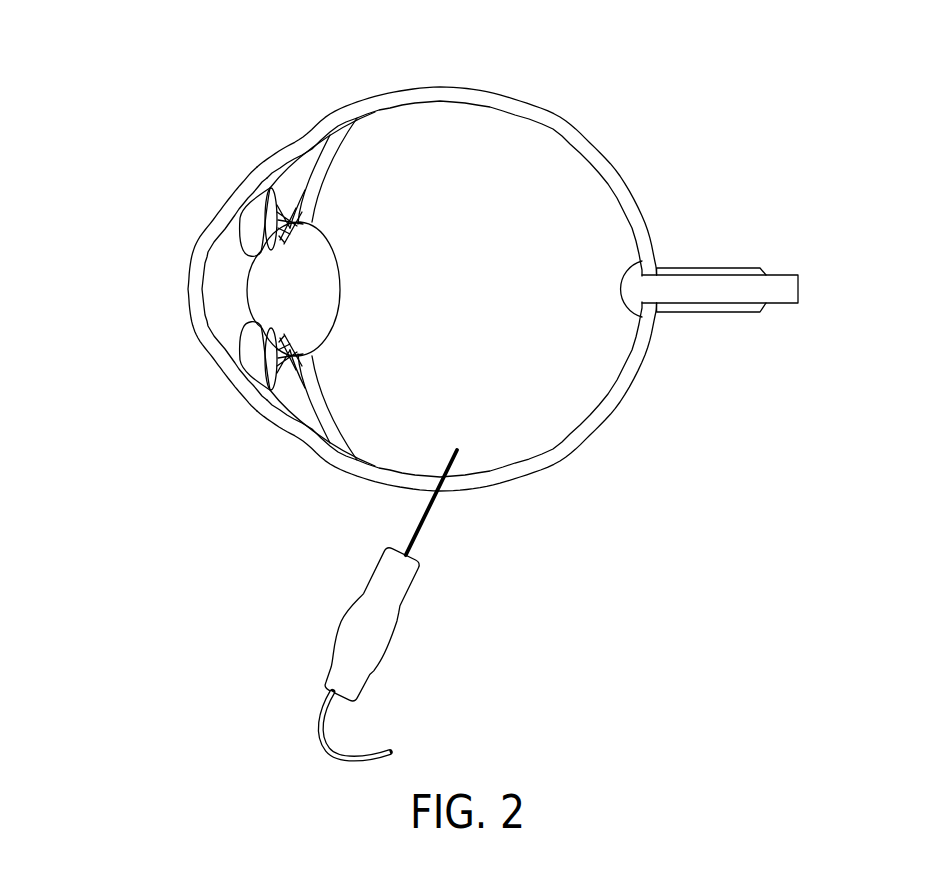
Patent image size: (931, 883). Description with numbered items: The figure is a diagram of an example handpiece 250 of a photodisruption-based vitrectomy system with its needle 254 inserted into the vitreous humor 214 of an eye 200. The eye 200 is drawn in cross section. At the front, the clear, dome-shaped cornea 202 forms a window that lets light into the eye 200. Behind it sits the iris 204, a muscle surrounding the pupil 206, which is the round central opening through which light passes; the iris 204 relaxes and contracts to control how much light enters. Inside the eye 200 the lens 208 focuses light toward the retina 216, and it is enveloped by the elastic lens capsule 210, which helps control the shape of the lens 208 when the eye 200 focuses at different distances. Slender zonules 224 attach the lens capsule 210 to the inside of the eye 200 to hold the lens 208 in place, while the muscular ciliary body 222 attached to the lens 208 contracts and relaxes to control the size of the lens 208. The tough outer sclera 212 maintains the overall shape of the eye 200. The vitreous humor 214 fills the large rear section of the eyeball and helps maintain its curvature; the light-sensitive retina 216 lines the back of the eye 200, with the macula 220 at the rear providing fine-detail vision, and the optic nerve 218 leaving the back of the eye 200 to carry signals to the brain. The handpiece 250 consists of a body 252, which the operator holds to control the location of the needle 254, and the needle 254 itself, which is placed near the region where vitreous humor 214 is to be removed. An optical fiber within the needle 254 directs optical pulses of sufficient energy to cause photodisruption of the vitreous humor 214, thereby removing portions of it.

The eye 200 is at (663, 130).
The cornea 202 is at (193, 253).
The iris 204 is at (242, 358).
The pupil 206 is at (221, 289).
The lens 208 is at (316, 257).
The lens capsule 210 is at (341, 290).
The sclera 212 is at (526, 100).
The vitreous humor 214 is at (520, 224).
The retina 216 is at (621, 383).
The optic nerve 218 is at (701, 236).
The macula 220 is at (623, 283).
The ciliary body 222 is at (292, 392).
The zonules 224 is at (302, 215).
The handpiece 250 is at (291, 593).
The body 252 is at (412, 585).
The needle 254 is at (450, 457).